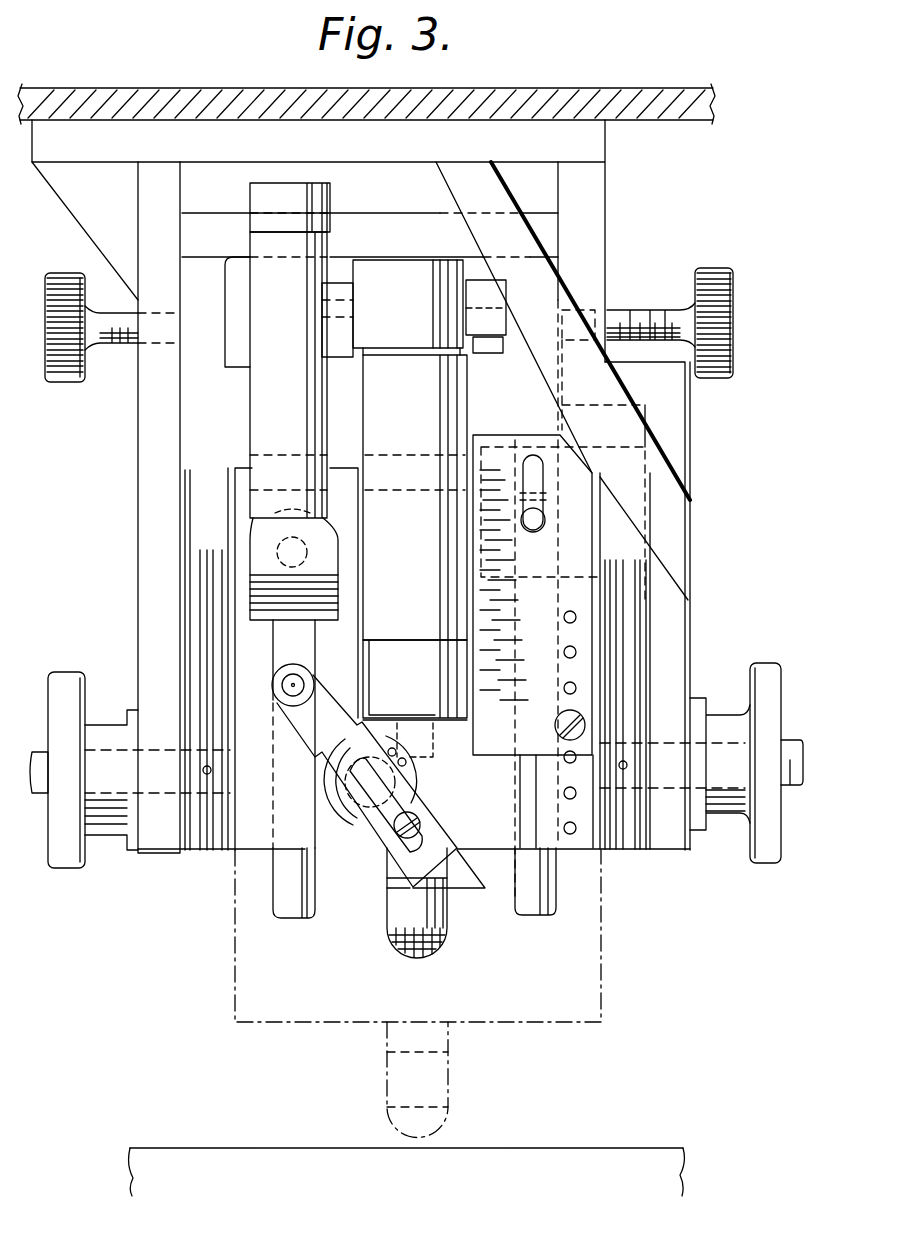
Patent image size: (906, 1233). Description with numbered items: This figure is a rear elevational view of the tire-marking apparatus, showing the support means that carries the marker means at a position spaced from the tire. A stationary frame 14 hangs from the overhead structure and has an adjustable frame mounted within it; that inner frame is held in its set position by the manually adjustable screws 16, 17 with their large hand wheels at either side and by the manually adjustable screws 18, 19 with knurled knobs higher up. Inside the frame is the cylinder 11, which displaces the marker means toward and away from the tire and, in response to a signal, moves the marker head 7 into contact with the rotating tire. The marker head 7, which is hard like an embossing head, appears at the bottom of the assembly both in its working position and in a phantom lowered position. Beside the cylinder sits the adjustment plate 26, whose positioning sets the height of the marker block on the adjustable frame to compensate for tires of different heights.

The marker head 7 is at (388, 922).
The cylinder 11 is at (460, 396).
The stationary frame 14 is at (381, 640).
The manually adjustable screw 16 is at (75, 870).
The manually adjustable screw 17 is at (765, 865).
The manually adjustable screw 18 is at (73, 384).
The manually adjustable screw 19 is at (716, 380).
The adjustment plate 26 is at (593, 512).